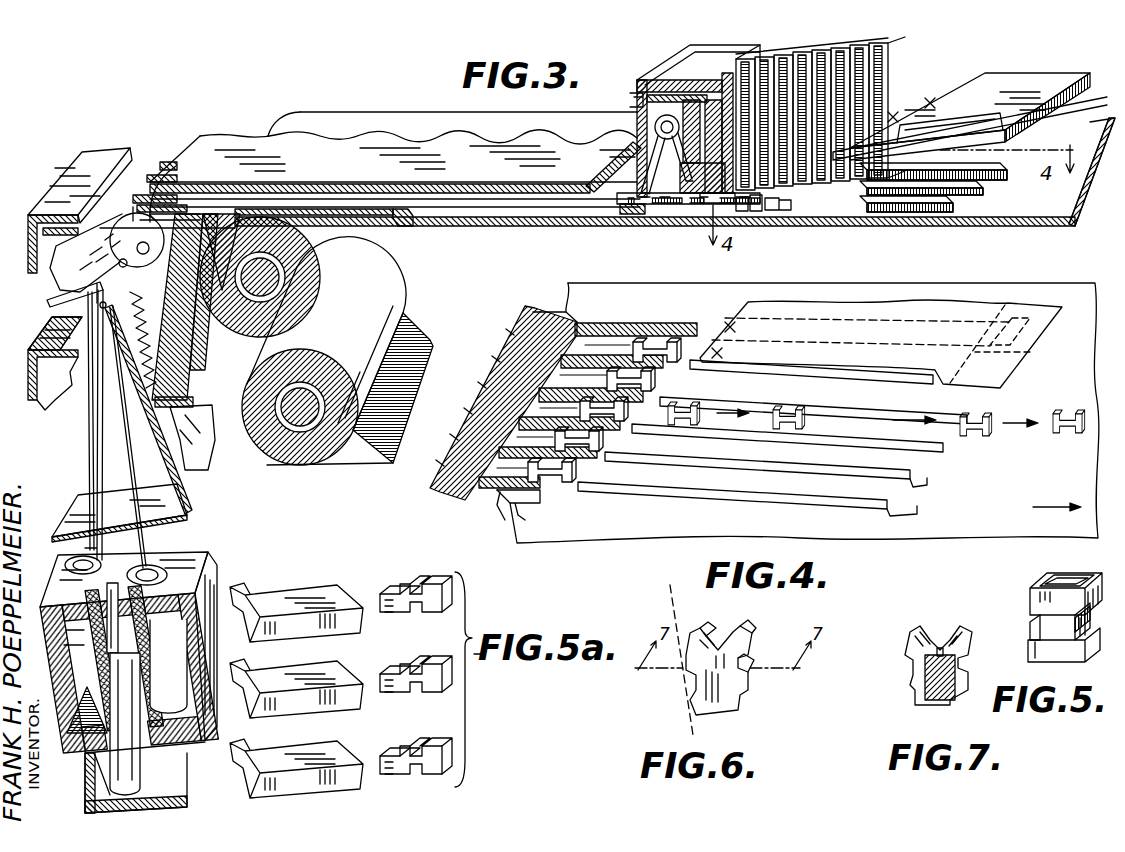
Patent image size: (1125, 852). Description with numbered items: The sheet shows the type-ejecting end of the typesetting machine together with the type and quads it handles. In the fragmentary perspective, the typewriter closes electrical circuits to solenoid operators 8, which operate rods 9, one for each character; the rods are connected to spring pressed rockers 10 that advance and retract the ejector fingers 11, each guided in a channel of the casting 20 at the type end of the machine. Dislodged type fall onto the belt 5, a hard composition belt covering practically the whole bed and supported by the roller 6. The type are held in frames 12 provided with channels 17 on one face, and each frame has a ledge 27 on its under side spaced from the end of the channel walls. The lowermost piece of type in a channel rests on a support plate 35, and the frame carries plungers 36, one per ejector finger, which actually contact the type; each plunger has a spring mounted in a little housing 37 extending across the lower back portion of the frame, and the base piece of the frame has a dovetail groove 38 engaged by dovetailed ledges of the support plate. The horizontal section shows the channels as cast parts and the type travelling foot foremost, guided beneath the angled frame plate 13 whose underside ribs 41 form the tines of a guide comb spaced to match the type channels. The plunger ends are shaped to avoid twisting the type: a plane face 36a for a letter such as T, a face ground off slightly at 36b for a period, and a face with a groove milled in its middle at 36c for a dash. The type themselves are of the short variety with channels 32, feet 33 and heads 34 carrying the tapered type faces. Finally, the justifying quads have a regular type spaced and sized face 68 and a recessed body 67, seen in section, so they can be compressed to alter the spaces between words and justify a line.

In FIG. 3, the belt 5 is at (832, 206).
In FIG. 3, the roller 6 is at (314, 279).
In FIG. 3, the solenoid operators 8 is at (133, 675).
In FIG. 3, the rods 9 is at (92, 406).
In FIG. 3, the spring pressed rockers 10 is at (52, 297).
In FIG. 3, the ejector fingers 11 is at (617, 200).
In FIG. 3, the frames 12 is at (883, 78).
In FIG. 3, the frame plate 13 is at (1027, 80).
In FIG. 4, the frame plate 13 is at (913, 312).
In FIG. 4, the channels 17 is at (540, 330).
In FIG. 3, the casting 20 is at (400, 136).
In FIG. 3, the ledge 27 is at (745, 214).
In FIG. 5, the channels 32 is at (1040, 626).
In FIG. 5, the feet 33 is at (1045, 655).
In FIG. 5, the heads 34 is at (1032, 585).
In FIG. 3, the support plate 35 is at (793, 210).
In FIG. 4, the support plate 35 is at (543, 488).
In FIG. 3, the plungers 36 is at (667, 202).
In FIG. 4, the plungers 36 is at (512, 428).
In FIG. 5A, the plungers 36 is at (282, 592).
In FIG. 3, the plane plunger face 36a is at (634, 150).
In FIG. 5A, the plane plunger face 36a is at (353, 590).
In FIG. 5A, the ground-off plunger face 36b is at (350, 688).
In FIG. 5A, the grooved plunger face 36c is at (357, 741).
In FIG. 3, the housing 37 is at (636, 108).
In FIG. 3, the dovetail groove 38 is at (716, 204).
In FIG. 3, the ribs 41 is at (1000, 170).
In FIG. 4, the ribs 41 is at (1018, 357).
In FIG. 7, the recessed body 67 is at (920, 685).
In FIG. 6, the face 68 is at (730, 717).